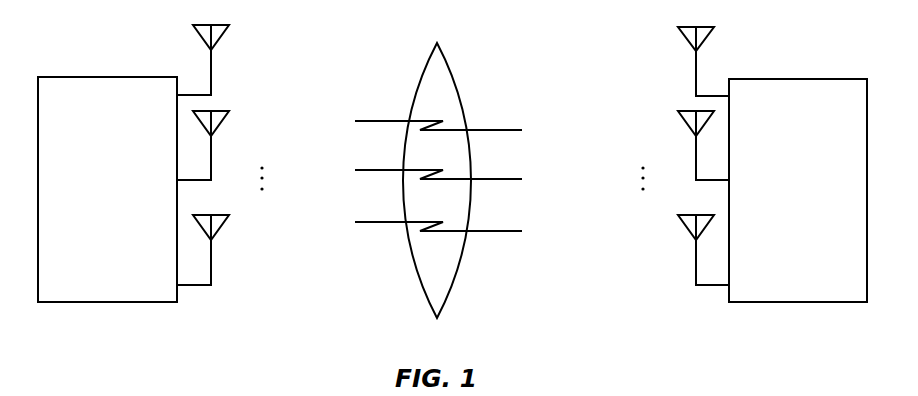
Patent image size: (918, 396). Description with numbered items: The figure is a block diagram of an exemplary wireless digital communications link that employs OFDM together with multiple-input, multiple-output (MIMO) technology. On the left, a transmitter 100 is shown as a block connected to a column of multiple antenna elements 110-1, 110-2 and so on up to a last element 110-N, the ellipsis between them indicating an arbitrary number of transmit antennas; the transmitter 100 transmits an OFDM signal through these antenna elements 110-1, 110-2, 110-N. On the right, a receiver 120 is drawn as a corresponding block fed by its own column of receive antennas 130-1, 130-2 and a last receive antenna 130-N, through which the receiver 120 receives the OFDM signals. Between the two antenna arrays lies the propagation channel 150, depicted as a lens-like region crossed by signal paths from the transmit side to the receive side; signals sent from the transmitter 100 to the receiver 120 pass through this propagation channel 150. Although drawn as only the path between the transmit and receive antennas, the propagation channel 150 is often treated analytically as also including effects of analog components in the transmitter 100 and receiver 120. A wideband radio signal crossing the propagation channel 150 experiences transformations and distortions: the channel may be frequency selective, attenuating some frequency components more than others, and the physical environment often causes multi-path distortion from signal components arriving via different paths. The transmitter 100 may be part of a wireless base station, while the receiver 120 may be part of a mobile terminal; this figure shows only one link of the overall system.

The transmitter 100 is at (91, 77).
The antenna element 110-1 is at (226, 30).
The antenna element 110-2 is at (226, 116).
The antenna element 110-N is at (226, 220).
The propagation channel 150 is at (450, 63).
The receive antenna 130-1 is at (681, 31).
The receive antenna 130-2 is at (681, 116).
The receive antenna 130-N is at (681, 220).
The receiver 120 is at (817, 79).